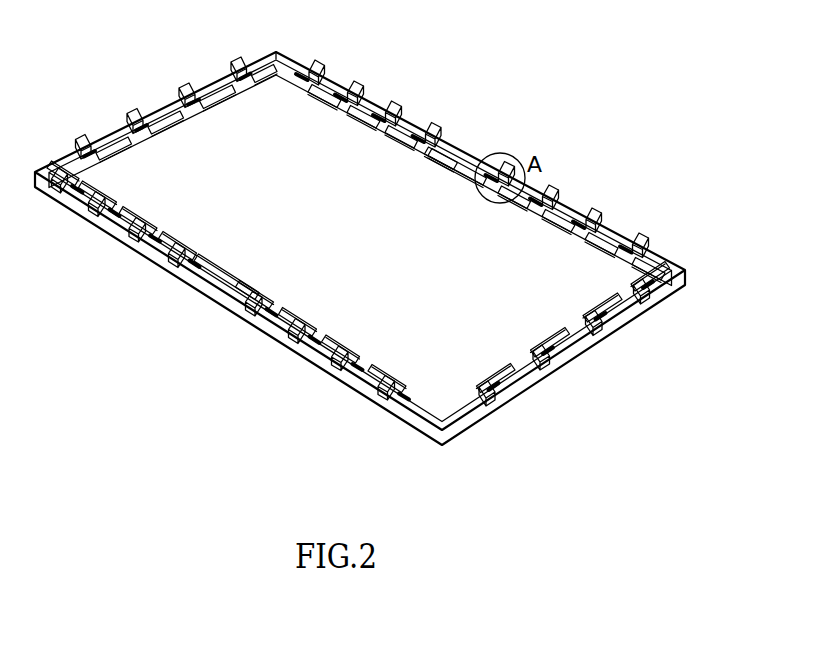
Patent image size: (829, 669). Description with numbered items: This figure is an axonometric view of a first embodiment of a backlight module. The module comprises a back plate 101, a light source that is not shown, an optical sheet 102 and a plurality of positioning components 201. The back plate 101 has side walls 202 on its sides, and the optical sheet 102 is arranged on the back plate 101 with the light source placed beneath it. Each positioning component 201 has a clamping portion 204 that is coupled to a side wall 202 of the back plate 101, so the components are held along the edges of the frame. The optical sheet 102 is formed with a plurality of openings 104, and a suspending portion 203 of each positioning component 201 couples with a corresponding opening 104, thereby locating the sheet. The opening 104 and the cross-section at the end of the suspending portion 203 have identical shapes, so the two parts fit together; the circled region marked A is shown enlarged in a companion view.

The back plate 101 is at (163, 120).
The optical sheet 102 is at (360, 142).
The opening 104 is at (272, 330).
The positioning component 201 is at (503, 168).
The side wall 202 is at (205, 295).
The suspending portion 203 is at (537, 367).
The clamping portion 204 is at (558, 372).